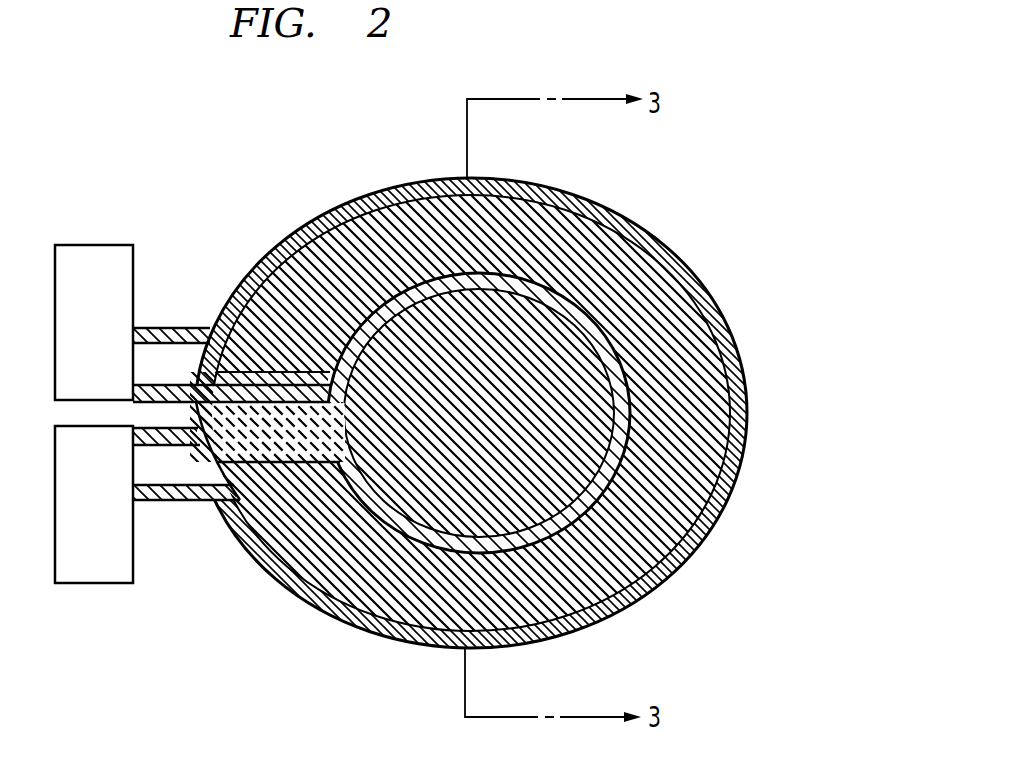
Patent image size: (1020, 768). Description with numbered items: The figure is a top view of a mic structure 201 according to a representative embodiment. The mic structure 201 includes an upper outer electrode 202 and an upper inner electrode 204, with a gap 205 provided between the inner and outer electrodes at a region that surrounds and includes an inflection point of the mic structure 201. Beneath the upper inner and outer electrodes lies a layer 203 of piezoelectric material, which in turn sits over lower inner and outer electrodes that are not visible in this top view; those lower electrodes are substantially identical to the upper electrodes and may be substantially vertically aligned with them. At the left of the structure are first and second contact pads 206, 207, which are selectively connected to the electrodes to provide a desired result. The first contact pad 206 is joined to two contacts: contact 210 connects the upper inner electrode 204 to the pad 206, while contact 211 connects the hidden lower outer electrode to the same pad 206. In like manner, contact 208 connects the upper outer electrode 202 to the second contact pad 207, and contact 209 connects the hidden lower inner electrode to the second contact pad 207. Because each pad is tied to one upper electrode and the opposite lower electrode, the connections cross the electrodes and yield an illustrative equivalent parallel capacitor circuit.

The mic structure 201 is at (532, 360).
The upper outer electrode 202 is at (538, 197).
The layer of piezoelectric material 203 is at (668, 248).
The upper inner electrode 204 is at (557, 478).
The gap 205 is at (620, 370).
The first contact pad 206 is at (95, 245).
The second contact pad 207 is at (92, 585).
The contact 208 is at (202, 500).
The contact 209 is at (163, 445).
The contact 210 is at (160, 385).
The contact 211 is at (204, 343).